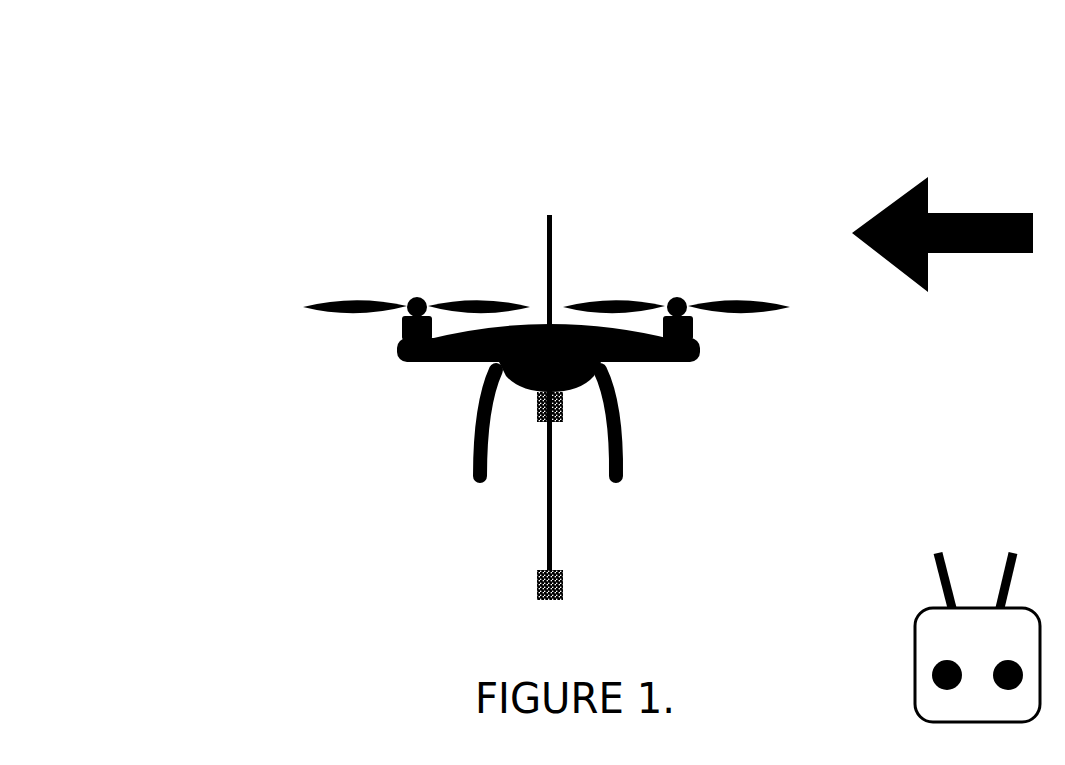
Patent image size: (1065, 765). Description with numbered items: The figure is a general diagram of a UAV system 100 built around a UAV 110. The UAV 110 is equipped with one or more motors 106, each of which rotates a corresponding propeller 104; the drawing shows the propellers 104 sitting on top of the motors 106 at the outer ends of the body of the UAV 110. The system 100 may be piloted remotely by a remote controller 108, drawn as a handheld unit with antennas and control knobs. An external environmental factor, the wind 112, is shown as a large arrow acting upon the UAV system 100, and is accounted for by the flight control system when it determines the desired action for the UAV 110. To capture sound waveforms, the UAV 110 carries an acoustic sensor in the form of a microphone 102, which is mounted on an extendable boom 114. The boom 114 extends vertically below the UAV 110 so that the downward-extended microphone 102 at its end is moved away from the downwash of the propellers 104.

The UAV system 100 is at (213, 100).
The microphone 102 is at (553, 407).
The propeller 104 is at (368, 293).
The motor 106 is at (417, 287).
The remote controller 108 is at (912, 645).
The UAV 110 is at (650, 358).
The wind 112 is at (957, 188).
The extendable boom 114 is at (567, 232).